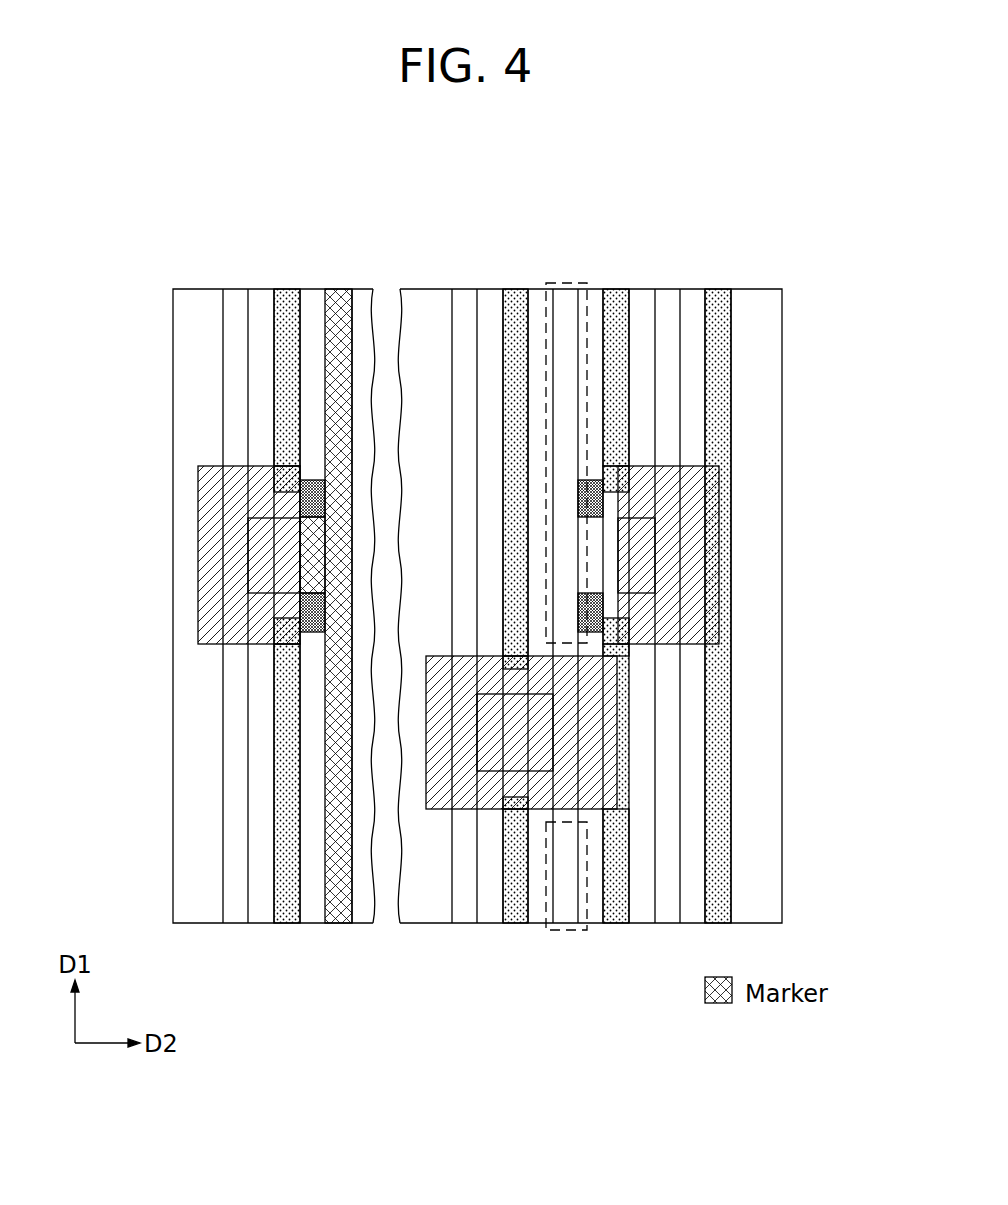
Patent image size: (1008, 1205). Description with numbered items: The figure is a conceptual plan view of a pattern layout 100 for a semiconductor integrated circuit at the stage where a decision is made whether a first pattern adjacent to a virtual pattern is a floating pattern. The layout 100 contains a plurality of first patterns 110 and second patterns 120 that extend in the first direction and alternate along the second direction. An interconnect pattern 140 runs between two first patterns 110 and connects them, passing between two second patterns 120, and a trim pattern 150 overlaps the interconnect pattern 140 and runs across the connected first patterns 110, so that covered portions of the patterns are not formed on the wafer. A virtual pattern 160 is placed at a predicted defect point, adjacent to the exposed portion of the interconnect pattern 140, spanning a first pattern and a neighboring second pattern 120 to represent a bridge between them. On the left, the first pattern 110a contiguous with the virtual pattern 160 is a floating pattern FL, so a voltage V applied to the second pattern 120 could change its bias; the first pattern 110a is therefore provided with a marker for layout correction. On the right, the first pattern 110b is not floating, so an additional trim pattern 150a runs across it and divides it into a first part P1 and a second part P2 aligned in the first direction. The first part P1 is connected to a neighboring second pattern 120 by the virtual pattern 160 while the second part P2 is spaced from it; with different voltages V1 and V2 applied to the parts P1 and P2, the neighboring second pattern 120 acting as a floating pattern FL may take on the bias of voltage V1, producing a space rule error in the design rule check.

The pattern layout 100 is at (750, 145).
The first pattern 110 is at (234, 300).
The first pattern 110a is at (355, 312).
The first pattern 110b is at (563, 312).
The second pattern 120 is at (287, 386).
The interconnect pattern 140 is at (276, 612).
The trim pattern 150 is at (198, 522).
The additional trim pattern 150a is at (440, 812).
The virtual pattern 160 is at (303, 480).
The first part P1 is at (597, 300).
The second part P2 is at (548, 893).
The voltage V1 is at (566, 272).
The voltage V2 is at (566, 945).
The voltage V is at (287, 273).
The floating pattern FL is at (323, 277).